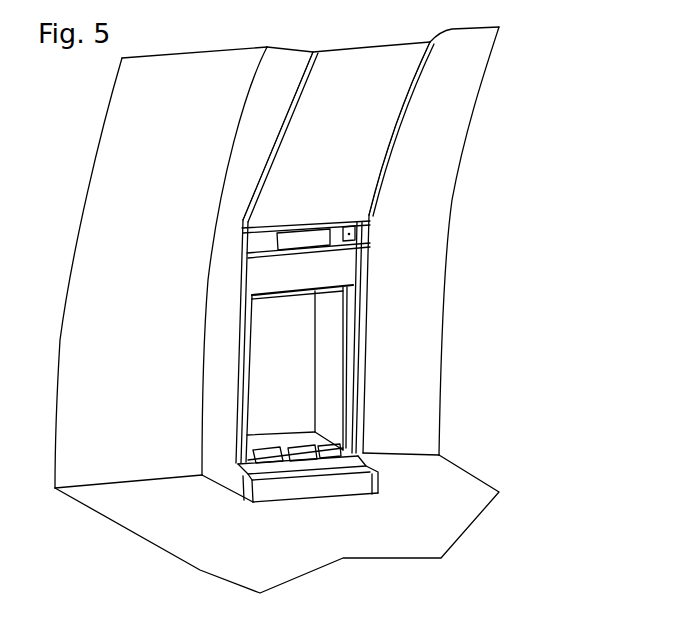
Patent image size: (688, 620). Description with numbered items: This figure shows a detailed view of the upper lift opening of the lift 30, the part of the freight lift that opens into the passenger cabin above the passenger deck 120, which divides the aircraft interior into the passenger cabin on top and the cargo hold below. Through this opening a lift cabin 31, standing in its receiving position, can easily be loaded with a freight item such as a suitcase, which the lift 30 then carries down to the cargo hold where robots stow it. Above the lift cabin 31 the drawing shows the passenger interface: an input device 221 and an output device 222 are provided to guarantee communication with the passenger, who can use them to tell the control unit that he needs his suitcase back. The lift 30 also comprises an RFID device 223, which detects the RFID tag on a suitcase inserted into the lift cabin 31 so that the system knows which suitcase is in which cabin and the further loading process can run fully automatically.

The lift 30 is at (342, 158).
The output device 222 is at (371, 213).
The input device 221 is at (351, 235).
The lift cabin 31 is at (328, 322).
The RFID device 223 is at (350, 453).
The passenger deck 120 is at (452, 496).